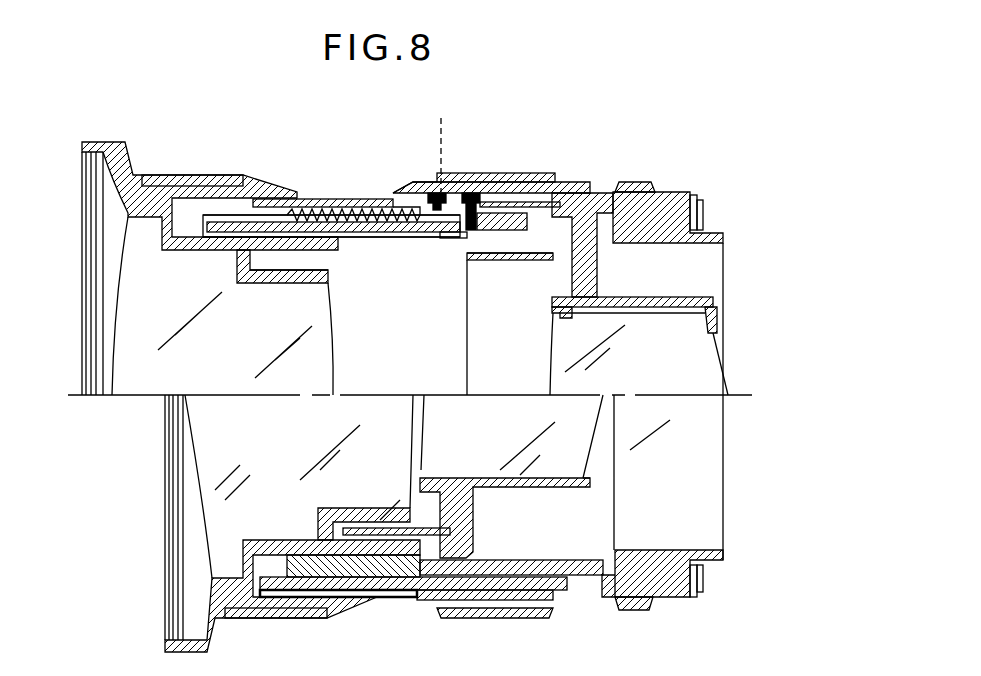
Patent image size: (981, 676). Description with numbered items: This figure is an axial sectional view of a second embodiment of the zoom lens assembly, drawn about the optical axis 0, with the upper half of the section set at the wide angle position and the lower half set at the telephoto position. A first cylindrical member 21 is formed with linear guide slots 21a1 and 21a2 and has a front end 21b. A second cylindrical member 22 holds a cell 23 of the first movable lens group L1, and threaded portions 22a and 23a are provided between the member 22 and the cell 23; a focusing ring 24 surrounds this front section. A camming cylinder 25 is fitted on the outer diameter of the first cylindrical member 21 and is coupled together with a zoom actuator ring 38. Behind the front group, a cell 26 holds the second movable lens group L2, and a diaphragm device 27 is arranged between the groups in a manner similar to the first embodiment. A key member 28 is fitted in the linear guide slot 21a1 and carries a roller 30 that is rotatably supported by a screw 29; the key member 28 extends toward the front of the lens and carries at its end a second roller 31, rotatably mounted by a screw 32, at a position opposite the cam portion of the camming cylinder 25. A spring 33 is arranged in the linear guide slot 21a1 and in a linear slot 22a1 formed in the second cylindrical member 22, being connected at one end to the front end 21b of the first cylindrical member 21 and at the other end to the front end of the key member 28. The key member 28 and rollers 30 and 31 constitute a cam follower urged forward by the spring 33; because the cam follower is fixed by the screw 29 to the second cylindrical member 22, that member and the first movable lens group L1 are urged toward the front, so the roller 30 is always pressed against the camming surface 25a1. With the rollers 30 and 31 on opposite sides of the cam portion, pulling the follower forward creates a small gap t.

The first cylindrical member 21 is at (611, 196).
The linear guide slot 21a1 is at (337, 208).
The linear guide slot 21a2 is at (545, 204).
The front end of first cylindrical member 21b is at (258, 199).
The second cylindrical member 22 is at (268, 222).
The threaded portion 22a is at (325, 236).
The linear slot 22a1 is at (444, 240).
The cell of first movable lens group 23 is at (334, 282).
The threaded portion 23a is at (336, 268).
The focusing ring 24 is at (193, 178).
The camming cylinder 25 is at (500, 262).
The camming surface 25a1 is at (466, 192).
The cell of second movable lens group 26 is at (586, 222).
The diaphragm device 27 is at (475, 518).
The key member 28 is at (640, 186).
The screw 29 is at (446, 236).
The roller 30 is at (500, 254).
The second roller 31 is at (432, 197).
The screw 32 is at (468, 196).
The spring 33 is at (305, 226).
The zoom actuator ring 38 is at (508, 618).
The first movable lens group L1 is at (150, 297).
The second movable lens group L2 is at (716, 346).
The small gap t is at (440, 143).
The optical axis 0 is at (414, 397).